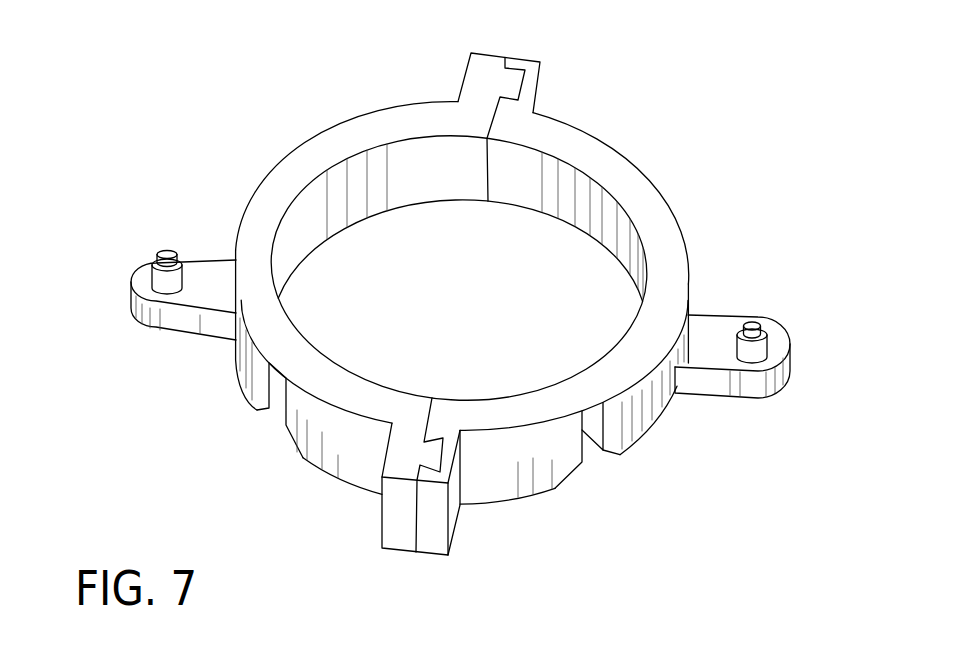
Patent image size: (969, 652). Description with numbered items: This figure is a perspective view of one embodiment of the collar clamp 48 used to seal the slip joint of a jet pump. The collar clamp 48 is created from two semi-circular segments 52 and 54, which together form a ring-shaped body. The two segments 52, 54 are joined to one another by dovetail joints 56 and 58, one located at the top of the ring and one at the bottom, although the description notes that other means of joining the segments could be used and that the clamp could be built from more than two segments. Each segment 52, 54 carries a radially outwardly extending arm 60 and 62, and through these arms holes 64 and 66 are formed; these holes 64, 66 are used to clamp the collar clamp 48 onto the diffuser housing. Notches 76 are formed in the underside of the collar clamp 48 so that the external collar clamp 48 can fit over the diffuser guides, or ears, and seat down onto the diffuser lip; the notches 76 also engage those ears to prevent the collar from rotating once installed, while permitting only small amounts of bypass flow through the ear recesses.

The collar clamp 48 is at (635, 113).
The semi-circular segment 52 is at (645, 182).
The semi-circular segment 54 is at (272, 188).
The dovetail joint 56 is at (510, 52).
The dovetail joint 58 is at (417, 530).
The radially outwardly extending arm 60 is at (705, 320).
The radially outwardly extending arm 62 is at (213, 267).
The hole 64 is at (160, 252).
The hole 66 is at (775, 343).
The notch 76 is at (598, 430).